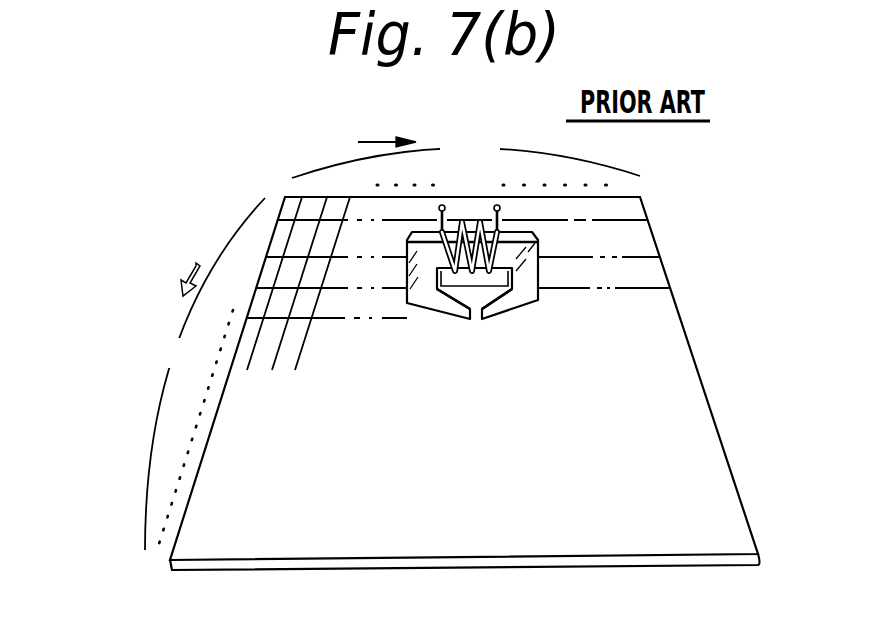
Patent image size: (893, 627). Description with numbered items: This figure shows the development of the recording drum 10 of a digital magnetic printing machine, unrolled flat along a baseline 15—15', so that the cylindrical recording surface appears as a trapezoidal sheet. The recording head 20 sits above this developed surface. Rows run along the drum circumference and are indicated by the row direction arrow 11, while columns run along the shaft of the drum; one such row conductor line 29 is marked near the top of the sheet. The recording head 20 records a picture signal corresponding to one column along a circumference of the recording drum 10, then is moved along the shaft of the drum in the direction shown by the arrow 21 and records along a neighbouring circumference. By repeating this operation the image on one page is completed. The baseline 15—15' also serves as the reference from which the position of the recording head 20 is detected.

The recording drum 10 is at (695, 347).
The row direction arrow 11 is at (378, 142).
The baseline 15 is at (173, 396).
The baseline 15' is at (450, 161).
The recording head 20 is at (522, 311).
The arrow 21 is at (190, 266).
The row line (conductor) 29 is at (634, 216).